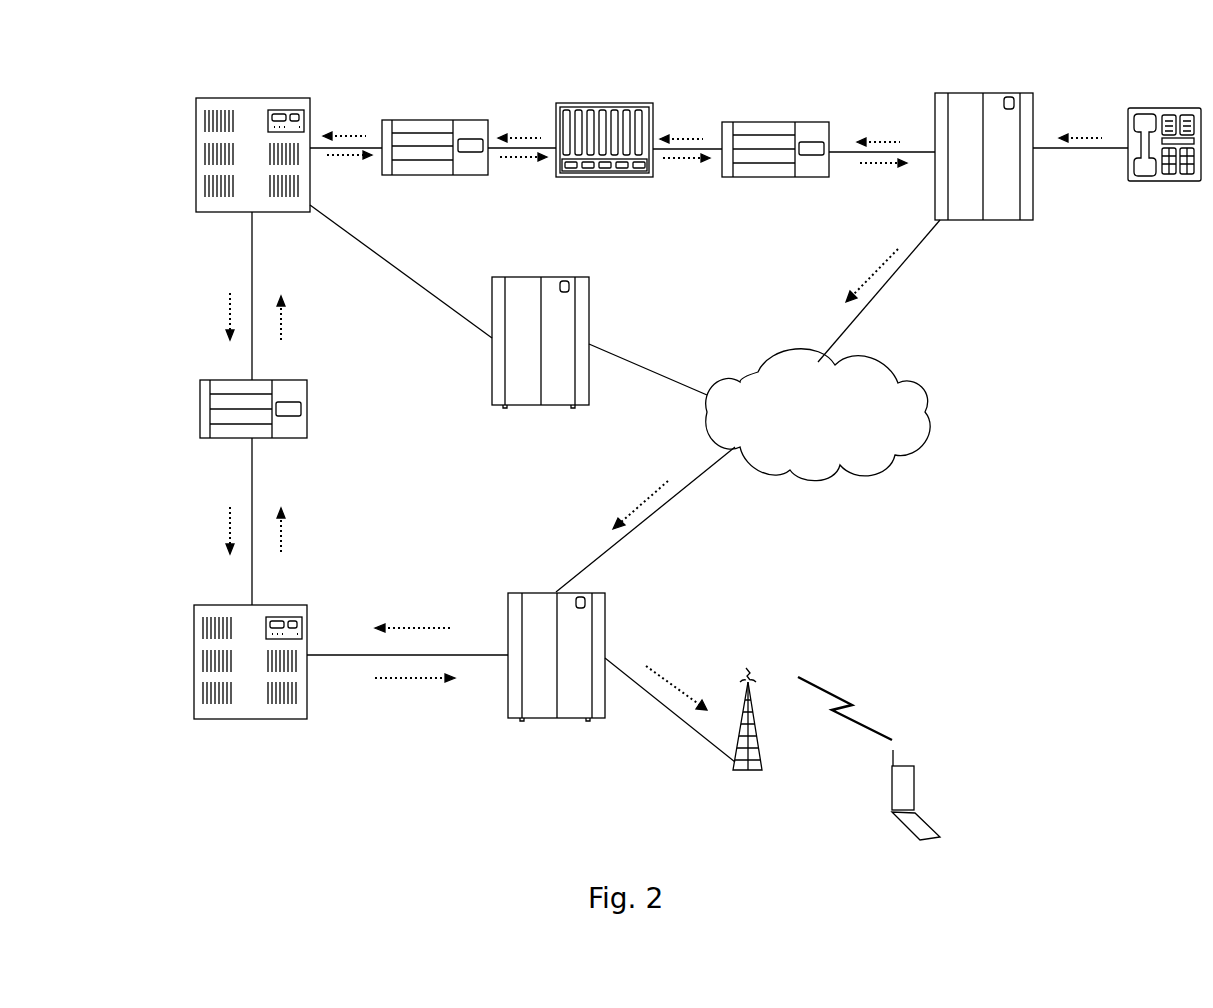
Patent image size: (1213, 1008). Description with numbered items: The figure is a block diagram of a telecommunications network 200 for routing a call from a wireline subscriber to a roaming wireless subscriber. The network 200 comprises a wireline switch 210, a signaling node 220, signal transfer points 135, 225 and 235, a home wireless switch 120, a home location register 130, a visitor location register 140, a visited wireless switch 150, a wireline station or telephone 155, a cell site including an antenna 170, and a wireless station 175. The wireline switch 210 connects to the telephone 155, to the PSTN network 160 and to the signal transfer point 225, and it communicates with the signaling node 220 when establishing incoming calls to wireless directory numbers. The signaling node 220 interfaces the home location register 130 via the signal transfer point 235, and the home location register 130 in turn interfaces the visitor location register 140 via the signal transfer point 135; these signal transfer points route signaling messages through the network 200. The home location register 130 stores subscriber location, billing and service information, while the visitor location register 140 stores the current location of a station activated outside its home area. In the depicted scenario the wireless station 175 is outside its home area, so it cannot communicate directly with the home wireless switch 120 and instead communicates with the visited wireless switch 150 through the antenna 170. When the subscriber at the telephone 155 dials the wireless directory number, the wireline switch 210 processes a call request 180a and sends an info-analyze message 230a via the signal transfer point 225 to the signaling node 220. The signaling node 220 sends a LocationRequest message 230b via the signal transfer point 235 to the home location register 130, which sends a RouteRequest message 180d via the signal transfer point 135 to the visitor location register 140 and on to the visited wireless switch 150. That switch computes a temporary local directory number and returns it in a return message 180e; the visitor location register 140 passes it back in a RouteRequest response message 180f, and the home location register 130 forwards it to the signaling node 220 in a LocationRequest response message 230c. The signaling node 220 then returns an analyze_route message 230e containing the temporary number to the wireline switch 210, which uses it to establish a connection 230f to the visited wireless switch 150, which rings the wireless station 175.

The home wireless switch 120 is at (589, 318).
The home location register 130 is at (196, 120).
The signal transfer point 135 is at (200, 404).
The visitor location register 140 is at (194, 665).
The visited wireless switch 150 is at (508, 593).
The wireline station or telephone 155 is at (1176, 184).
The PSTN network 160 is at (878, 468).
The antenna 170 is at (756, 772).
The wireless station 175 is at (932, 838).
The telecommunications network 200 is at (1086, 568).
The wireline switch 210 is at (958, 222).
The signaling node 220 is at (602, 178).
The signal transfer point 225 is at (776, 178).
The signal transfer point 235 is at (417, 177).
The call request 180a is at (1088, 132).
The RouteRequest message 180d is at (225, 309).
The ANSI-41 message 180e is at (420, 626).
The RouteRequest response message 180f is at (285, 310).
The info-analyze message 230a is at (690, 132).
The LocationRequest message 230b is at (352, 131).
The LocationRequest response message 230c is at (346, 162).
The analyze_route message 230e is at (684, 165).
The connection 230f is at (885, 264).